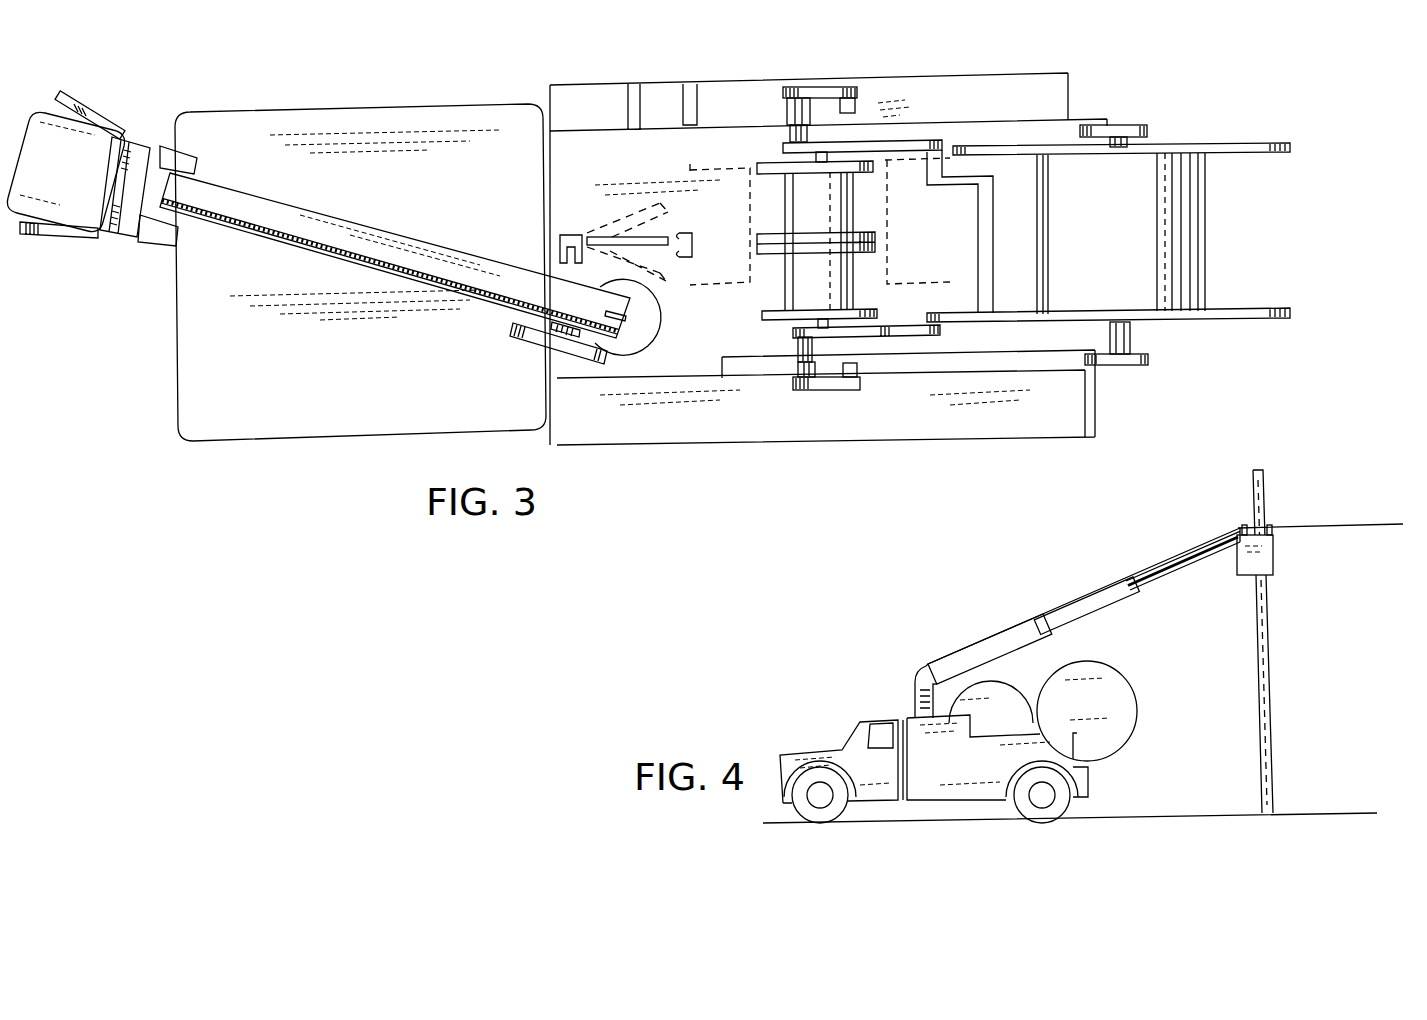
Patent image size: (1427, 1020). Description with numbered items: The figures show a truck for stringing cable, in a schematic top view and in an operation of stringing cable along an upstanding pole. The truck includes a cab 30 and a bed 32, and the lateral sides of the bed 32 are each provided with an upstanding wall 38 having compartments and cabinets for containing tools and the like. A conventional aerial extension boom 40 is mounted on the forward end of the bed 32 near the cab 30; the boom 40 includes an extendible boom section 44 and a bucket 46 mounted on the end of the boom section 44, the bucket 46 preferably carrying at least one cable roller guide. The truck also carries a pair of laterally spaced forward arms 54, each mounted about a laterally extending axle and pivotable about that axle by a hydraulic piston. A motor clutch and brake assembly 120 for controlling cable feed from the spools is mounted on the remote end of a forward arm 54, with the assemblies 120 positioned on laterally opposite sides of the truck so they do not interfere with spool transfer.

In FIG. 3, the cab 30 is at (362, 366).
In FIG. 4, the cab 30 is at (866, 777).
In FIG. 3, the bed 32 is at (714, 334).
In FIG. 3, the upstanding wall 38 is at (1020, 112).
In FIG. 4, the upstanding wall 38 is at (980, 777).
In FIG. 3, the aerial extension boom 40 is at (531, 346).
In FIG. 3, the extendible boom section 44 is at (390, 226).
In FIG. 4, the extendible boom section 44 is at (1110, 616).
In FIG. 3, the bucket 46 is at (79, 180).
In FIG. 4, the bucket 46 is at (1258, 565).
In FIG. 3, the forward arm 54 is at (913, 140).
In FIG. 3, the motor clutch and brake assembly 120 is at (829, 88).